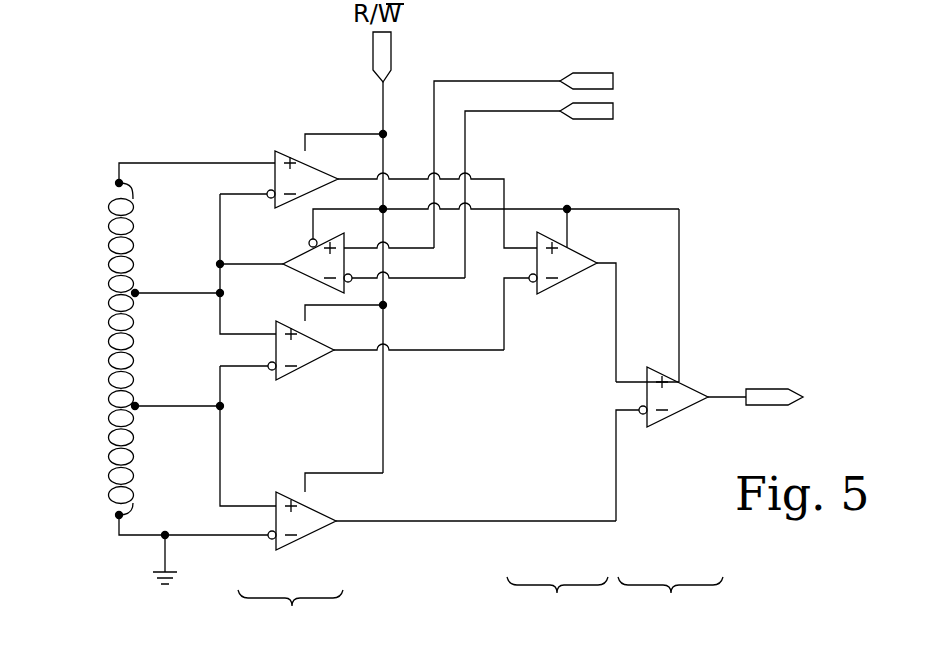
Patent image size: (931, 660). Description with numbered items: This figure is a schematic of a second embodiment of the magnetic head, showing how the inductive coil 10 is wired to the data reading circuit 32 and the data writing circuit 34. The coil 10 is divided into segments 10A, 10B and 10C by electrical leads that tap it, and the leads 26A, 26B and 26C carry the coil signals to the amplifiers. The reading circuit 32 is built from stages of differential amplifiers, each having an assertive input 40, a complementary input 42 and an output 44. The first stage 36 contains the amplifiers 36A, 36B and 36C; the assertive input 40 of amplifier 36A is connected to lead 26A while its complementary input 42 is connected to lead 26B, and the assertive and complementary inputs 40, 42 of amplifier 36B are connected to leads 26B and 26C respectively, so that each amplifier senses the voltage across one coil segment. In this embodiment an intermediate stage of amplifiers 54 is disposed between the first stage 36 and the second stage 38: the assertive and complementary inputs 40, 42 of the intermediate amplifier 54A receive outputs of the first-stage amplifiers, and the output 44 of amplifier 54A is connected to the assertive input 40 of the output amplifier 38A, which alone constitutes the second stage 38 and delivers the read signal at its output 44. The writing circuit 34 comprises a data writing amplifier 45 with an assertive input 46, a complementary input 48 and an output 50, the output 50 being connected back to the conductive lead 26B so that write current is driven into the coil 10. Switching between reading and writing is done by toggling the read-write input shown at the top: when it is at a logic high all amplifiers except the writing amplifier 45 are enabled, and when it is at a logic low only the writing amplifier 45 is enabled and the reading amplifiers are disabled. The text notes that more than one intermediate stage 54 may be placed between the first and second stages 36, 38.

The coil 10 is at (74, 349).
The coil segment 10A is at (109, 263).
The coil segment 10B is at (109, 345).
The coil segment 10C is at (109, 440).
The electrical lead 26A is at (116, 183).
The electrical lead 26B is at (139, 291).
The electrical lead 26C is at (139, 404).
The data reading circuit 32 is at (358, 568).
The data writing circuit 34 is at (410, 300).
The first stage 36 is at (310, 371).
The amplifier 36A is at (285, 152).
The amplifier 36B is at (310, 372).
The amplifier 36C is at (310, 541).
The second stage 38 is at (673, 418).
The output amplifier 38A is at (690, 416).
The assertive input 40 is at (273, 162).
The complementary input 42 is at (269, 197).
The output 44 is at (337, 178).
The data writing amplifier 45 is at (322, 286).
The assertive input 46 is at (345, 250).
The complementary input 48 is at (351, 280).
The output 50 is at (289, 259).
The intermediate stage of amplifiers 54 is at (531, 415).
The amplifier 54A is at (575, 281).